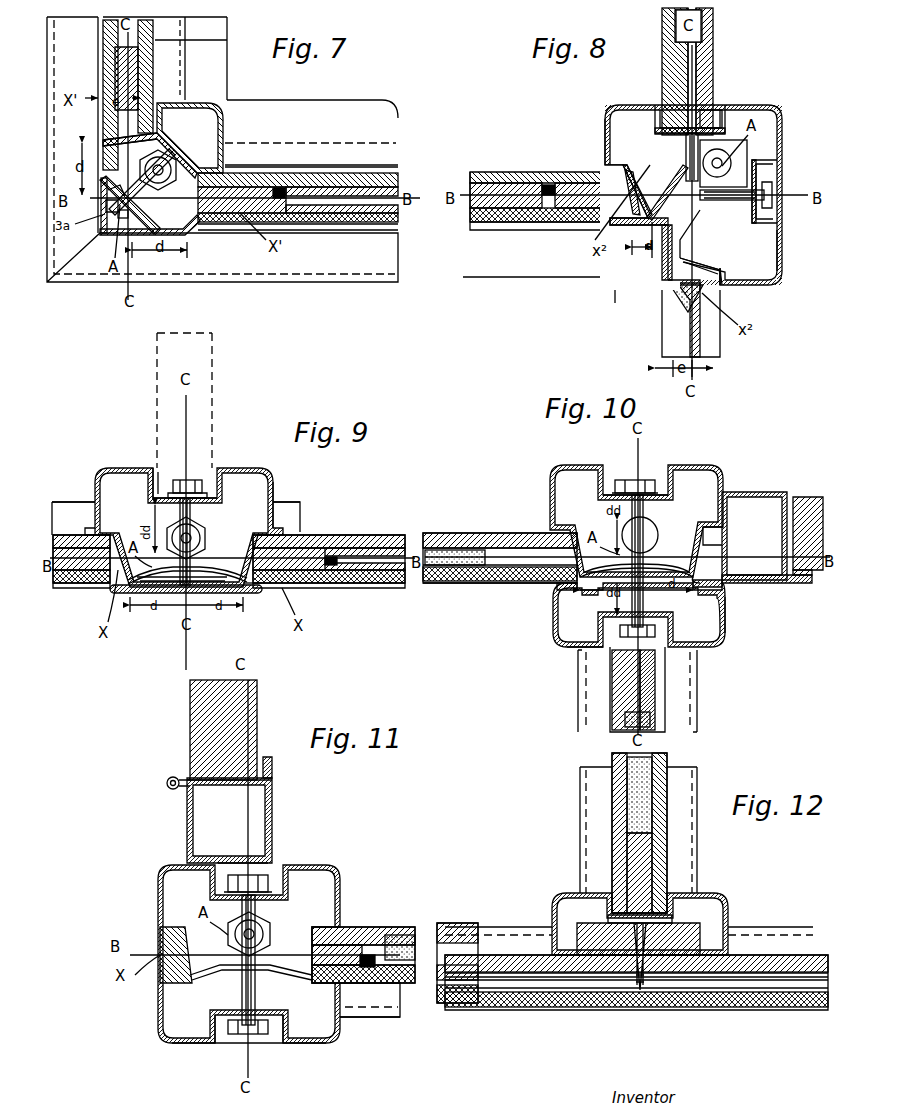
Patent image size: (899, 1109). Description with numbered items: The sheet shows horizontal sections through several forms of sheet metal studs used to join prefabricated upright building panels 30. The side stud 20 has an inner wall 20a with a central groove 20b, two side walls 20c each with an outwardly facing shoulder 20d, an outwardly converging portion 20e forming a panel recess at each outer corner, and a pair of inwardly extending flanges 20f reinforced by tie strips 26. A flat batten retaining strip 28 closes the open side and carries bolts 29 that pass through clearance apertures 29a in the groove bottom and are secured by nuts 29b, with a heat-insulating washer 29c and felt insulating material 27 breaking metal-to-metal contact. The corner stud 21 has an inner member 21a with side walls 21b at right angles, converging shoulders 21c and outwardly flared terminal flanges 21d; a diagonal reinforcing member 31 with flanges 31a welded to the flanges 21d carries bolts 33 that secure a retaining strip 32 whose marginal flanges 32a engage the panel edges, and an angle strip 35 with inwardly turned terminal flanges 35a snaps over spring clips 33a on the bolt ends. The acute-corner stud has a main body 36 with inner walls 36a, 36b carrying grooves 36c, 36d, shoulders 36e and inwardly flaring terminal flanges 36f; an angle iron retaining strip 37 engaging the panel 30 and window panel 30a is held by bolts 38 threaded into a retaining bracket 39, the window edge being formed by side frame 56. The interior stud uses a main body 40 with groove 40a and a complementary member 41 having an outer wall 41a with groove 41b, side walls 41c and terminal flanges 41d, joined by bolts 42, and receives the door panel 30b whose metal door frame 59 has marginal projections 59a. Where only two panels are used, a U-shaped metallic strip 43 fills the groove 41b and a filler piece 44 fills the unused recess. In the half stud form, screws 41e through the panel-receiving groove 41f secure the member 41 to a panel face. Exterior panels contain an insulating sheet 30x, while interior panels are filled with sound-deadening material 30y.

In FIG. 9, the stud 20 is at (97, 474).
In FIG. 9, the inner wall 20a is at (273, 480).
In FIG. 9, the groove 20b is at (195, 478).
In FIG. 9, the side walls 20c is at (95, 518).
In FIG. 9, the shoulder 20d is at (273, 505).
In FIG. 9, the outwardly converging portion 20e is at (272, 545).
In FIG. 9, the inwardly extending flanges 20f is at (130, 594).
In FIG. 7, the corner stud 21 is at (227, 133).
In FIG. 7, the inner member 21a is at (227, 110).
In FIG. 7, the side walls 21b is at (155, 100).
In FIG. 7, the shoulders 21c is at (168, 97).
In FIG. 7, the terminal flanges 21d is at (132, 82).
In FIG. 9, the tie strips 26 is at (210, 553).
In FIG. 9, the insulating material 27 is at (218, 594).
In FIG. 9, the retaining strip 28 is at (162, 594).
In FIG. 9, the bolts 29 is at (192, 520).
In FIG. 9, the apertures 29a is at (158, 498).
In FIG. 9, the nuts 29b is at (213, 473).
In FIG. 9, the heat-insulating washer 29c is at (160, 480).
In FIG. 7, the building panels 30 is at (227, 32).
In FIG. 8, the building panels 30 is at (713, 31).
In FIG. 9, the building panels 30 is at (325, 588).
In FIG. 10, the building panels 30 is at (465, 533).
In FIG. 11, the building panels 30 is at (385, 927).
In FIG. 12, the building panels 30 is at (667, 812).
In FIG. 8, the window panel 30a is at (670, 336).
In FIG. 10, the door panel 30b is at (760, 497).
In FIG. 11, the door panel 30b is at (187, 811).
In FIG. 7, the sheet of insulating material 30x is at (377, 222).
In FIG. 8, the sheet of insulating material 30x is at (500, 232).
In FIG. 9, the sheet of insulating material 30x is at (380, 563).
In FIG. 10, the sound-deadening material 30y is at (455, 565).
In FIG. 11, the sound-deadening material 30y is at (405, 927).
In FIG. 12, the sound-deadening material 30y is at (586, 810).
In FIG. 7, the reinforcing member 31 is at (150, 147).
In FIG. 7, the flanges 31a is at (105, 115).
In FIG. 7, the retaining strip 32 is at (160, 235).
In FIG. 7, the marginal flanges 32a is at (100, 143).
In FIG. 7, the bolts 33 is at (163, 170).
In FIG. 7, the spring clips 33a is at (133, 233).
In FIG. 7, the angle strip 35 is at (108, 212).
In FIG. 7, the terminal flanges 35a is at (123, 218).
In FIG. 8, the main body 36 is at (605, 132).
In FIG. 8, the inner wall 36a is at (640, 97).
In FIG. 8, the inner wall 36b is at (782, 256).
In FIG. 8, the groove 36c is at (722, 106).
In FIG. 8, the groove 36d is at (779, 165).
In FIG. 8, the shoulders 36e is at (617, 170).
In FIG. 8, the terminal flanges 36f is at (717, 256).
In FIG. 8, the retaining strip 37 is at (630, 225).
In FIG. 8, the bolts 38 is at (697, 147).
In FIG. 8, the retaining bracket 39 is at (700, 190).
In FIG. 10, the main body 40 is at (552, 476).
In FIG. 11, the main body 40 is at (158, 876).
In FIG. 10, the groove 40a is at (616, 470).
In FIG. 10, the complementary metallic member 41 is at (553, 632).
In FIG. 11, the complementary metallic member 41 is at (192, 1043).
In FIG. 12, the complementary metallic member 41 is at (556, 903).
In FIG. 10, the outer wall 41a is at (582, 646).
In FIG. 10, the panel-receiving groove 41b is at (662, 640).
In FIG. 11, the panel-receiving groove 41b is at (266, 1025).
In FIG. 10, the side walls 41c is at (726, 606).
In FIG. 10, the terminal flanges 41d is at (644, 601).
In FIG. 12, the terminal flanges 41d is at (700, 897).
In FIG. 10, the screws 41e is at (556, 590).
In FIG. 12, the screws 41e is at (659, 912).
In FIG. 12, the panel-receiving groove 41f is at (672, 888).
In FIG. 10, the bolts 42 is at (648, 530).
In FIG. 11, the metallic strip 43 is at (243, 1034).
In FIG. 11, the filler piece 44 is at (160, 935).
In FIG. 8, the side frame 56 is at (695, 268).
In FIG. 10, the door frame 59 is at (790, 497).
In FIG. 11, the door frame 59 is at (187, 828).
In FIG. 10, the marginal projections 59a is at (725, 490).
In FIG. 11, the marginal projections 59a is at (200, 870).